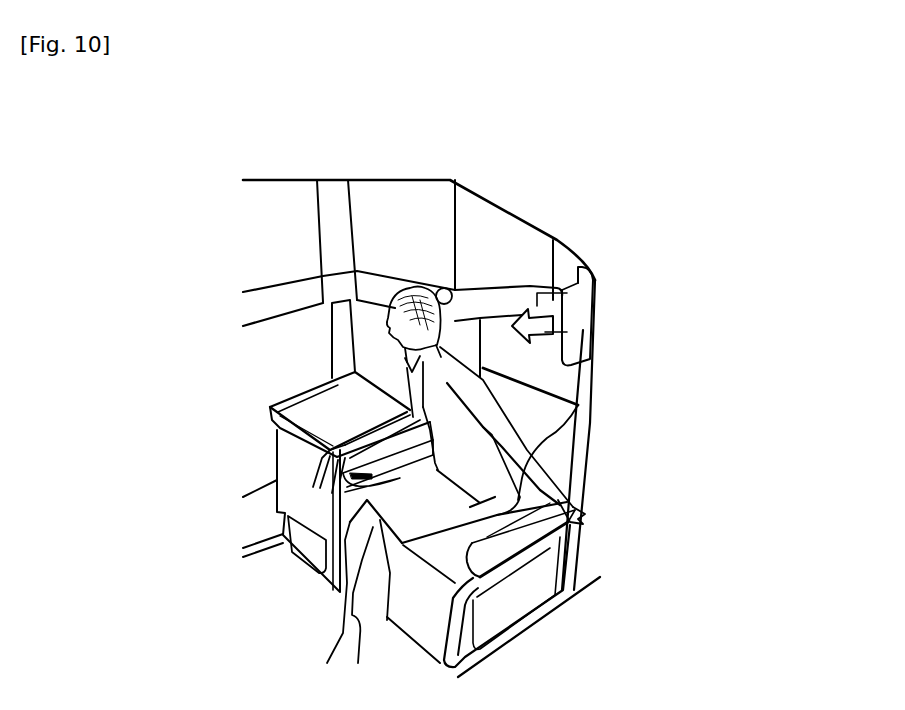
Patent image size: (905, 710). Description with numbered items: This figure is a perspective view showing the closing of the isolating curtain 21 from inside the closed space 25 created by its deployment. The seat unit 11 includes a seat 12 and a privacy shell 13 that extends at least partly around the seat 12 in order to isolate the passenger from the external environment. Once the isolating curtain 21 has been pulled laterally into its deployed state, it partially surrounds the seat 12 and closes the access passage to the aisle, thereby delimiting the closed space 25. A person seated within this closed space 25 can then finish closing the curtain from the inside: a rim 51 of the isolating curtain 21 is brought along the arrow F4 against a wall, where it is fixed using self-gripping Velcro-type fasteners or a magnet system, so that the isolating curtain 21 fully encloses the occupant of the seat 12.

The isolating curtain 21 is at (293, 203).
The seat unit 11 is at (500, 307).
The rim 51 is at (580, 308).
The arrow F4 is at (594, 324).
The privacy shell 13 is at (590, 418).
The seat 12 is at (527, 428).
The closed space 25 is at (268, 370).